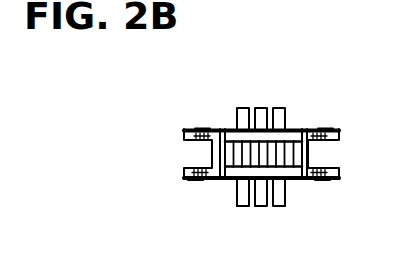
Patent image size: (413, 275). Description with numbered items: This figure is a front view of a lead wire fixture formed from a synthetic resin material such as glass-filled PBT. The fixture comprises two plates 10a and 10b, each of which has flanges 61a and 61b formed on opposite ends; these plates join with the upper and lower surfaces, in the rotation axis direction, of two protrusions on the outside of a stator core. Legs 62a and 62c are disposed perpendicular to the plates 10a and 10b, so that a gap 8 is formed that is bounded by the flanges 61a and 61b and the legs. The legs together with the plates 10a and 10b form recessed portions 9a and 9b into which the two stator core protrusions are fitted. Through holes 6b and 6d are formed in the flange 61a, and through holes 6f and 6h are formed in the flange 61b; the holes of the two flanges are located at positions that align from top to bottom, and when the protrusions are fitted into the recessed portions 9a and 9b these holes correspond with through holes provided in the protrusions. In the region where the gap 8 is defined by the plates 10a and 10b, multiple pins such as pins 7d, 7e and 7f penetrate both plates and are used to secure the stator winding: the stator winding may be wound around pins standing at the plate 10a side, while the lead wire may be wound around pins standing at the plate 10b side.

The gap 8 is at (230, 128).
The plate 10a is at (263, 118).
The plate 10b is at (270, 180).
The recessed portion 9a is at (211, 157).
The recessed portion 9b is at (309, 157).
The flange 61a is at (194, 130).
The flange 61b is at (185, 176).
The leg 62a is at (216, 128).
The right connecting portion 62c is at (304, 128).
The through hole 6b is at (203, 127).
The through hole 6d is at (328, 128).
The through hole 6f is at (192, 183).
The through hole 6h is at (322, 183).
The pin 7d is at (238, 195).
The pin 7e is at (258, 197).
The pin 7f is at (284, 197).